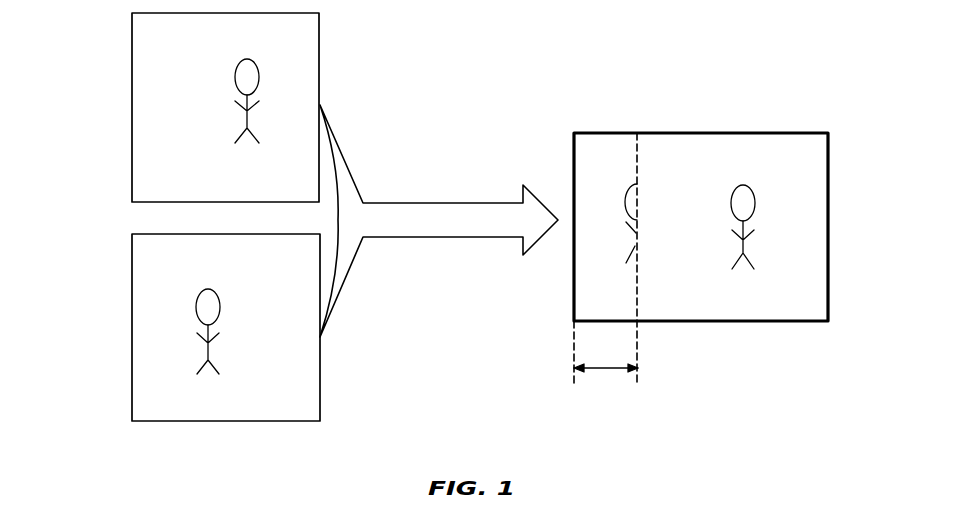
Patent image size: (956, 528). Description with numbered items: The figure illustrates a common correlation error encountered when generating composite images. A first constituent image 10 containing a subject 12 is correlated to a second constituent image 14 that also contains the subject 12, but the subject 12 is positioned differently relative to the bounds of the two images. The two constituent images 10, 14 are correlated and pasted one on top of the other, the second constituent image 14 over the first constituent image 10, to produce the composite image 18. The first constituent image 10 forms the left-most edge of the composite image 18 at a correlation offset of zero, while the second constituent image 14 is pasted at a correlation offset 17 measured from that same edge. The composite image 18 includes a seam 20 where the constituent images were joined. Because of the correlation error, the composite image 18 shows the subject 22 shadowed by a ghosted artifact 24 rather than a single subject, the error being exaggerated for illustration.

The first constituent image 10 is at (132, 30).
The subject 12 is at (237, 117).
The second constituent image 14 is at (132, 256).
The correlation offset 17 is at (602, 368).
The composite image 18 is at (578, 133).
The seam 20 is at (640, 140).
The object in composite image 22 is at (751, 185).
The ghosted artifact 24 is at (627, 187).